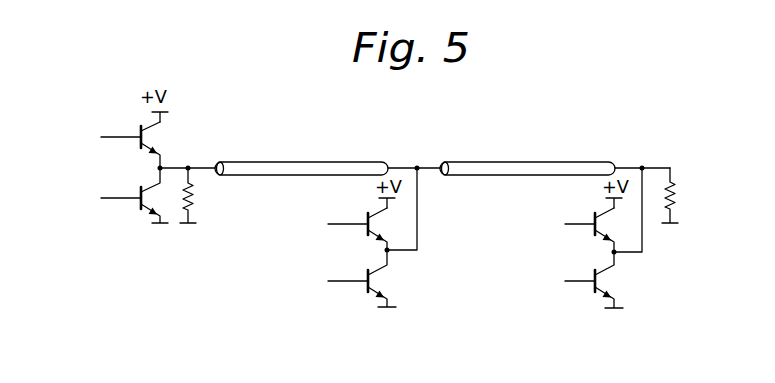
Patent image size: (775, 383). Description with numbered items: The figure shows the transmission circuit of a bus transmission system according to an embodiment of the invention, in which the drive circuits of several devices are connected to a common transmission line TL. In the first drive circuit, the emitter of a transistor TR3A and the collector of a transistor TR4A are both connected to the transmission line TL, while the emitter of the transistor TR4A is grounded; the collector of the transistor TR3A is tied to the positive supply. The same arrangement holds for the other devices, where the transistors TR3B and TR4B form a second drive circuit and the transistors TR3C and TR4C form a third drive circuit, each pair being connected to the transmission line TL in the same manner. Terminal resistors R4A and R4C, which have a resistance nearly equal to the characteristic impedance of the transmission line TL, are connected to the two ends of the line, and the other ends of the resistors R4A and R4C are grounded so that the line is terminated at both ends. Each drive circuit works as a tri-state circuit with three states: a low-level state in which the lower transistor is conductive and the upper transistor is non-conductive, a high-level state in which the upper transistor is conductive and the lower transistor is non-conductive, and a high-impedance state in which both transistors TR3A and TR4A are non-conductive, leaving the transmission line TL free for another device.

The transistor TR3A is at (161, 145).
The transistor TR4A is at (123, 200).
The terminal resistor R4A is at (211, 195).
The transmission line TL is at (320, 162).
The transistor TR3B is at (343, 221).
The transistor TR4B is at (347, 276).
The transistor TR3C is at (569, 222).
The transistor TR4C is at (573, 276).
The terminal resistor R4C is at (697, 195).